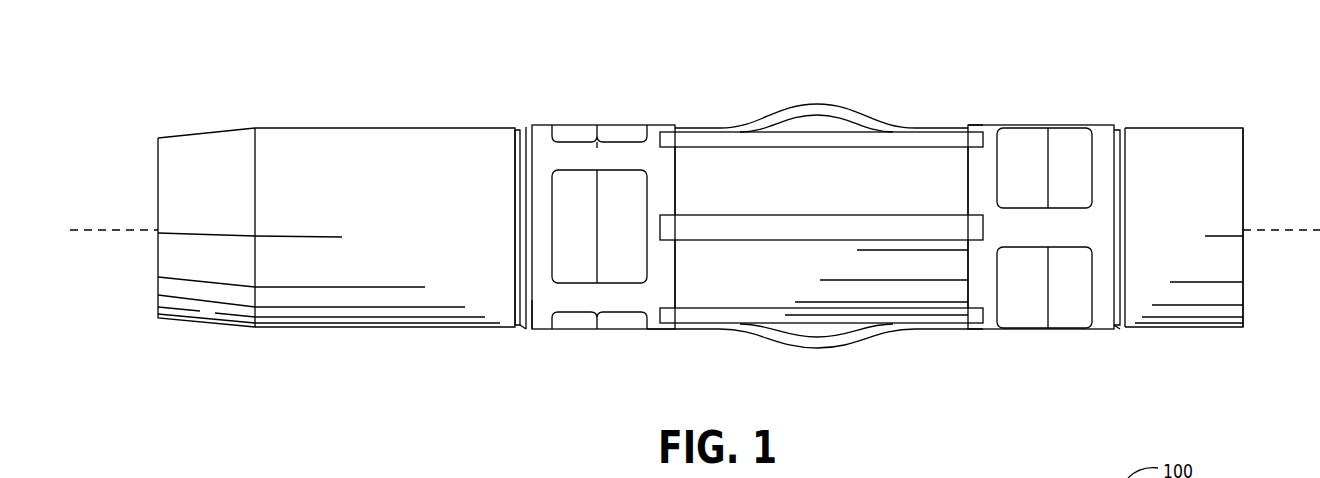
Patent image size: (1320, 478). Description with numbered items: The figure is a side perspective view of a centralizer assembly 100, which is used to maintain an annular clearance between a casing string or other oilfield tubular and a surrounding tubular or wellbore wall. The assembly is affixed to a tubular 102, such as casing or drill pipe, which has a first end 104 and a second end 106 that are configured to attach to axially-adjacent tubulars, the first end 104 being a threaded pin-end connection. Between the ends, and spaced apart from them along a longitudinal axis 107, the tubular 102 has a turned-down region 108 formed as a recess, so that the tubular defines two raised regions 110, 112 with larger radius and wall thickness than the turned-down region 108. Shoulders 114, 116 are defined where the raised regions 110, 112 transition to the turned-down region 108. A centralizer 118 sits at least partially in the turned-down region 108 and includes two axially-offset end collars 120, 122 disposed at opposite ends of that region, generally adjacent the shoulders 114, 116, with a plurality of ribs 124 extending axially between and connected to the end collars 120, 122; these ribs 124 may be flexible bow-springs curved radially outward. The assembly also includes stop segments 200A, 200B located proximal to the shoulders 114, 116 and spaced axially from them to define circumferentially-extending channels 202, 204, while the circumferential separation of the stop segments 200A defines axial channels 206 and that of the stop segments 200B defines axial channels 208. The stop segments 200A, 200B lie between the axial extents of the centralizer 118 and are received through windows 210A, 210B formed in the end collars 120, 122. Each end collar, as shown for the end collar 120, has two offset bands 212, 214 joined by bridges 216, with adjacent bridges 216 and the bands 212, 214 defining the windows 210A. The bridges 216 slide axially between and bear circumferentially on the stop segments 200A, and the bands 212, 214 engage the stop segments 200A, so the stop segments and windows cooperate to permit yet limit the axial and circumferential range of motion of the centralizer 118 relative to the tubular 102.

The centralizer assembly 100 is at (1018, 35).
The tubular 102 is at (307, 126).
The first end 104 is at (158, 136).
The second end 106 is at (1243, 126).
The longitudinal axis 107 is at (1310, 234).
The turned-down region 108 is at (714, 118).
The raised region 110 is at (465, 126).
The raised region 112 is at (1190, 126).
The shoulder 114 is at (520, 126).
The shoulder 116 is at (1125, 126).
The centralizer 118 is at (892, 106).
The end collar 120 is at (660, 126).
The end collar 122 is at (990, 126).
The ribs 124 is at (823, 103).
The stop segments 200A is at (567, 273).
The stop segments 200B is at (1060, 318).
The circumferentially-extending channel 202 is at (522, 331).
The circumferentially-extending channel 204 is at (1118, 331).
The axial channels 206 is at (571, 154).
The axial channels 208 is at (1025, 224).
The windows 210A is at (637, 262).
The windows 210B is at (1023, 312).
The band 212 is at (537, 320).
The band 214 is at (655, 331).
The bridges 216 is at (602, 157).